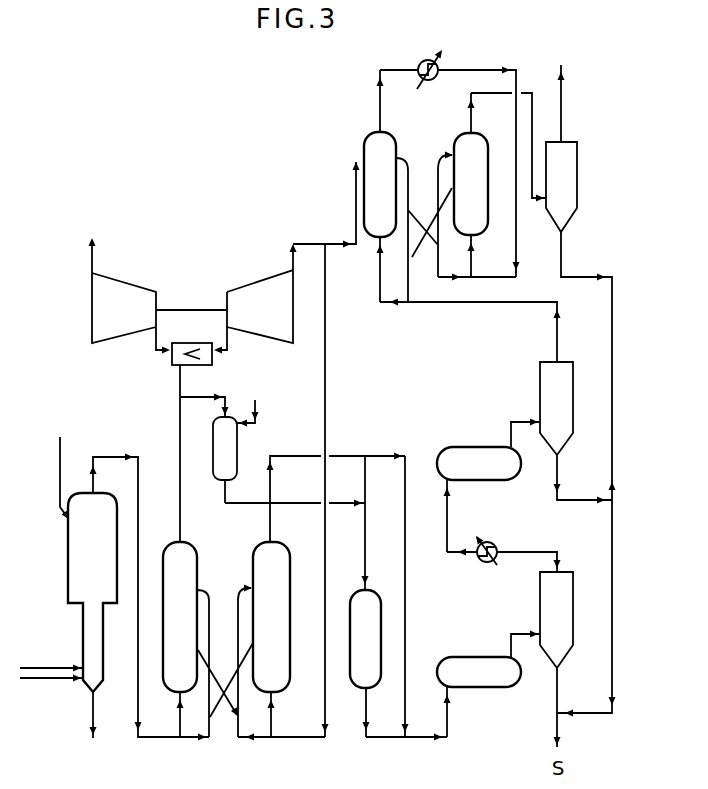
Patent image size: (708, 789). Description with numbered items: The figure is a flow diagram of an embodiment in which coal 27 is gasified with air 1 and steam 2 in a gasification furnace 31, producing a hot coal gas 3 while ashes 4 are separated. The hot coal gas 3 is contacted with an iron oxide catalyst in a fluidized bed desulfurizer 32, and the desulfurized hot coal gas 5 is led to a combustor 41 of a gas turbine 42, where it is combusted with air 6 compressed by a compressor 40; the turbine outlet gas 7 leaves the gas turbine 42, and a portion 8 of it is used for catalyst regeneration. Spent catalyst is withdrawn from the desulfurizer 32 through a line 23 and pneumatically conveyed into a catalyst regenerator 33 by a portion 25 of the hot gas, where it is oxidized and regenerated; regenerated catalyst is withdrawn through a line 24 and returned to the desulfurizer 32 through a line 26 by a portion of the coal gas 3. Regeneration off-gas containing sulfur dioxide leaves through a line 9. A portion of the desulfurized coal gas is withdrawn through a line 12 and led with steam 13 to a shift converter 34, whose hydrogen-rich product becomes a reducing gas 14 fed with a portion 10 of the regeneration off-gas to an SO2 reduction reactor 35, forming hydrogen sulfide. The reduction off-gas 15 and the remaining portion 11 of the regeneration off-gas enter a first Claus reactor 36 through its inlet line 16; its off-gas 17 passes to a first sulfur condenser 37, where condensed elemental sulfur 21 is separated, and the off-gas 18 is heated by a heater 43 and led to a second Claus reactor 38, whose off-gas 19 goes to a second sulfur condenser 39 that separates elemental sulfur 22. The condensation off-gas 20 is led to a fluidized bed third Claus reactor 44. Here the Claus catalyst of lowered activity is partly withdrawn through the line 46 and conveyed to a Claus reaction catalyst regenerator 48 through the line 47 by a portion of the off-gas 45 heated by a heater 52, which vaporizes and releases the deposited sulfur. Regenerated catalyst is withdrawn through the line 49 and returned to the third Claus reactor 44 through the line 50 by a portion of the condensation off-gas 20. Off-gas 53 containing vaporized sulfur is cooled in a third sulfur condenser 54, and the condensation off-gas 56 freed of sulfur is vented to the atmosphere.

The air 1 is at (51, 666).
The steam 2 is at (58, 678).
The hot coal gas 3 is at (108, 457).
The ashes 4 is at (93, 705).
The desulfurized hot coal gas 5 is at (178, 430).
The air 6 is at (93, 245).
The gas turbine outlet gas 7 is at (314, 244).
The portion of gas turbine outlet gas 8 is at (325, 293).
The line for regeneration off-gas 9 is at (290, 456).
The portion of regeneration off-gas 10 is at (365, 482).
The remaining portion of regeneration off-gas 11 is at (405, 497).
The line for coal gas portion 12 is at (204, 411).
The steam 13 is at (255, 400).
The reducing gas 14 is at (312, 503).
The reduction off-gas 15 is at (395, 737).
The drum 36 inlet line 16 is at (447, 717).
The off-gas 17 is at (516, 633).
The off-gas 18 is at (517, 552).
The off-gas 19 is at (518, 420).
The condensation off-gas 20 is at (446, 302).
The condensed elemental sulfur 21 is at (557, 690).
The elemental sulfur 22 is at (612, 592).
The line 23 is at (225, 728).
The line 24 is at (228, 690).
The portion of gas turbine outlet gas 25 is at (238, 607).
The line 26 is at (214, 578).
The coal 27 is at (60, 447).
The gasification furnace 31 is at (103, 604).
The desulfurizer 32 is at (195, 548).
The catalyst regenerator 33 is at (260, 548).
The shift converter 34 is at (237, 470).
The SO2 reduction reactor 35 is at (381, 592).
The first Claus reactor 36 is at (465, 657).
The first sulfur condenser 37 is at (539, 595).
The second Claus reactor 38 is at (470, 447).
The second sulfur condenser 39 is at (540, 364).
The compressor 40 is at (120, 336).
The combustor 41 is at (212, 357).
The gas turbine 42 is at (275, 340).
The heater 43 is at (486, 566).
The third Claus reactor 44 is at (361, 136).
The off-gas 45 is at (395, 70).
The line 46 is at (465, 270).
The line 47 is at (453, 149).
The Claus reaction catalyst regenerator 48 is at (488, 158).
The line 49 is at (428, 220).
The line 50 is at (446, 148).
The heater 52 is at (433, 88).
The off-gas 53 is at (497, 93).
The third sulfur condenser 54 is at (577, 156).
The condensation off-gas 56 is at (580, 103).